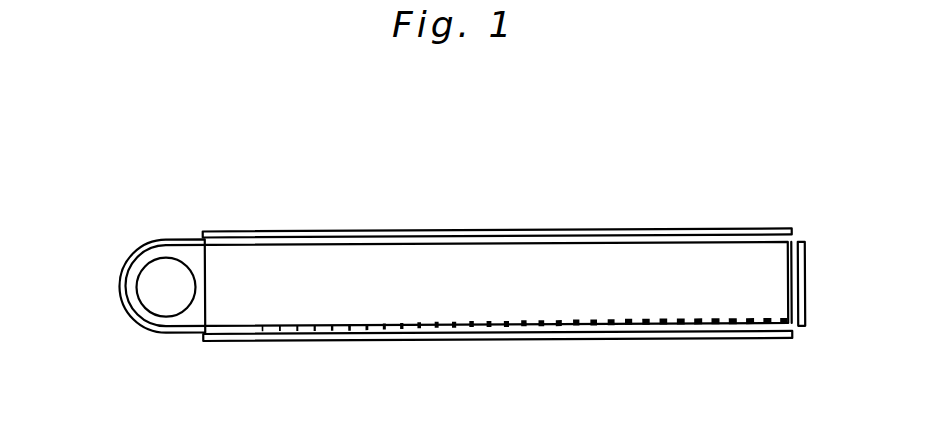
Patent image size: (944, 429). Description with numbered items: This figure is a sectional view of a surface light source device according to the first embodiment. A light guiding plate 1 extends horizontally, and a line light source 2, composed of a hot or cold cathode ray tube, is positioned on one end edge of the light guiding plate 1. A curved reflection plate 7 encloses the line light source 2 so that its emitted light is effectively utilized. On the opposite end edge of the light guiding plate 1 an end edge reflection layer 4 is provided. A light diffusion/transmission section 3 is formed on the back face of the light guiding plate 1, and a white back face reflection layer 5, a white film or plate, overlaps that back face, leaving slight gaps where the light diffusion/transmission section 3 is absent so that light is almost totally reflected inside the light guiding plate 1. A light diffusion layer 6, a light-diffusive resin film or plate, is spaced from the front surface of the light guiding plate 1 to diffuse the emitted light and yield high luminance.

The light guiding plate 1 is at (469, 297).
The line light source 2 is at (160, 284).
The light diffusion/transmission section 3 is at (697, 328).
The end edge reflection layer 4 is at (807, 284).
The back face reflection layer 5 is at (292, 344).
The light diffusion layer 6 is at (475, 232).
The curved reflection plate 7 is at (134, 327).